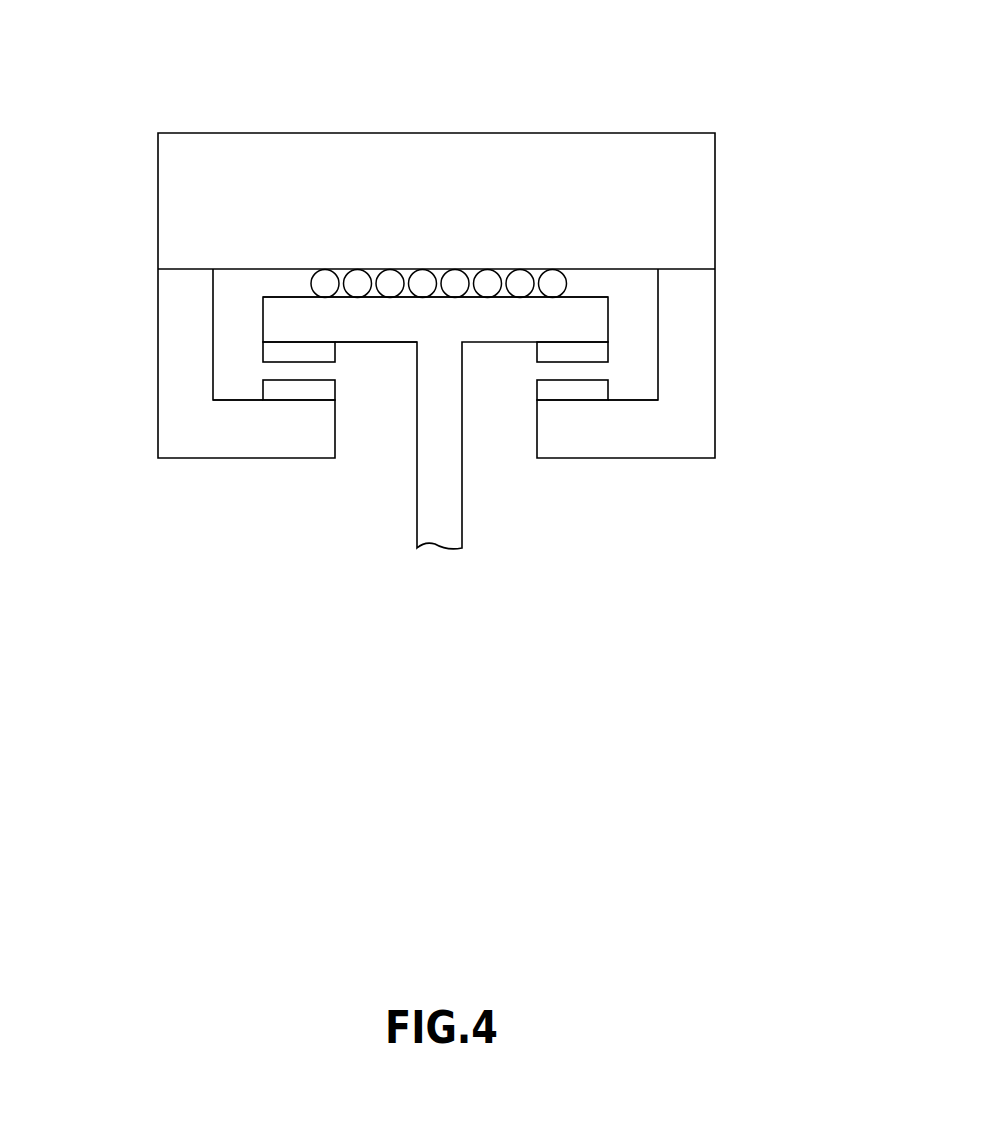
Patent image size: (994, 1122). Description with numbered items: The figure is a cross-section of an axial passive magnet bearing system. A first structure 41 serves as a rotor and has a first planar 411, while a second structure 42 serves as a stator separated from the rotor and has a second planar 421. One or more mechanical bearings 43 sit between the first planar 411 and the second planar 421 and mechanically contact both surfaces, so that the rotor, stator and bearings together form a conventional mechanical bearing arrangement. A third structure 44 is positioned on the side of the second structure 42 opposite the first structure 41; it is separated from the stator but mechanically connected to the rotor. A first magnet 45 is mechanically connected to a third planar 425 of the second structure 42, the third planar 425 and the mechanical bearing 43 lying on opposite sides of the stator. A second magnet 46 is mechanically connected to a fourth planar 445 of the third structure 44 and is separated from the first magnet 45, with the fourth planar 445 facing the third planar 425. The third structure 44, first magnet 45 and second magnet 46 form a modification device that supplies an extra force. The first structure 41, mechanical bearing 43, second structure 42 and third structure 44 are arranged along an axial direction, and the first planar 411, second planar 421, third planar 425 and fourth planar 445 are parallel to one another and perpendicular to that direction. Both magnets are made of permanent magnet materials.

The first structure 41 is at (660, 230).
The first planar 411 is at (307, 268).
The second structure 42 is at (437, 502).
The second planar 421 is at (275, 297).
The third planar 425 is at (343, 347).
The mechanical bearing 43 is at (325, 269).
The third structure 44 is at (190, 357).
The fourth planar 445 is at (228, 402).
The first magnet 45 is at (608, 352).
The second magnet 46 is at (298, 390).